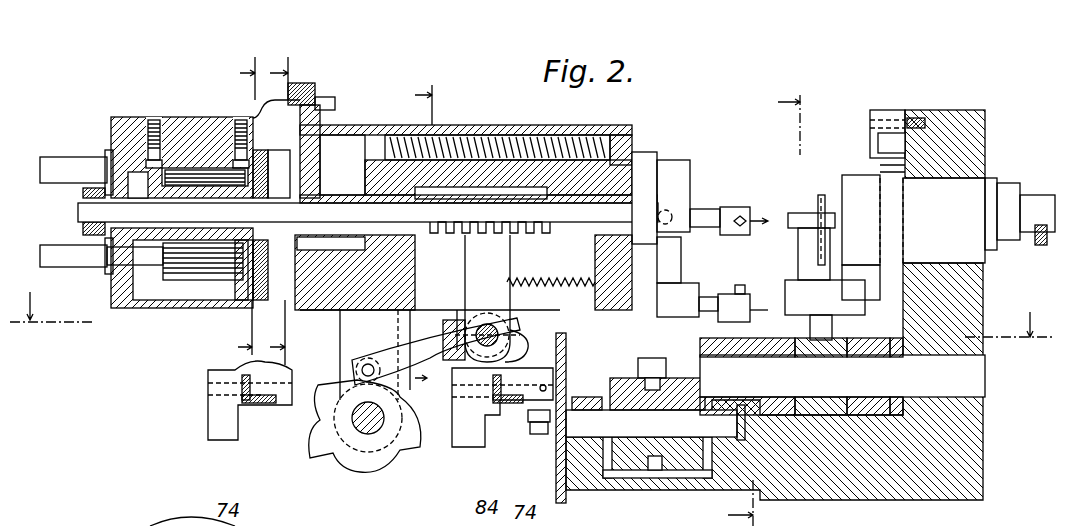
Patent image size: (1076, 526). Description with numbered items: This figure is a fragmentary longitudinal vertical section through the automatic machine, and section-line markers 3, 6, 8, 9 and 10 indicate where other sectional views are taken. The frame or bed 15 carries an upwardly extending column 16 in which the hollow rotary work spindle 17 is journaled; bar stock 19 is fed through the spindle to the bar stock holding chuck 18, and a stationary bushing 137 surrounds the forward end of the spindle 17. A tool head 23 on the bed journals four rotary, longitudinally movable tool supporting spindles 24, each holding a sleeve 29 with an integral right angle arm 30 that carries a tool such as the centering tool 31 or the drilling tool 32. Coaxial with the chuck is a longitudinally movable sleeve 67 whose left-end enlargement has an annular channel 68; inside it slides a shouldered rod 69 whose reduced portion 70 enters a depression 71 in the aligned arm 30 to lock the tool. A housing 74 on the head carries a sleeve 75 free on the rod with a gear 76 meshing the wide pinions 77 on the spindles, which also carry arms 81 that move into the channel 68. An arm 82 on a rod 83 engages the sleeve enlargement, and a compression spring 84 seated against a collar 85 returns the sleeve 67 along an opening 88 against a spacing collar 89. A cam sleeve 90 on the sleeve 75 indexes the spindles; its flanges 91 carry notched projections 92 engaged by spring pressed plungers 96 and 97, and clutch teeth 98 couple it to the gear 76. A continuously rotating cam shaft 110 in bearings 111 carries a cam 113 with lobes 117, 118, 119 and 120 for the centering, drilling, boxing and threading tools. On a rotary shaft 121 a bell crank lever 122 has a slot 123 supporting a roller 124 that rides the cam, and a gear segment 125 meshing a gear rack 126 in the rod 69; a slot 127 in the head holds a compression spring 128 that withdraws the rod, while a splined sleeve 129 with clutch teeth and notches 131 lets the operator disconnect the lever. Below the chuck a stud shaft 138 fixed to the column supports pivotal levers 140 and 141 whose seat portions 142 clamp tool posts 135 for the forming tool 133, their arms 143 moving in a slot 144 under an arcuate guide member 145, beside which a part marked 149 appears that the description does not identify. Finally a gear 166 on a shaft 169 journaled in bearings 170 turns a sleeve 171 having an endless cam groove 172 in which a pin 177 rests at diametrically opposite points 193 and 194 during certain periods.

The section line 3- 3 is at (763, 310).
The section line 6- 6 is at (532, 304).
The section line 8- 8 is at (242, 206).
The section line 9- 9 is at (276, 211).
The section line 10- 10 is at (415, 244).
The frame or bed 15 is at (830, 502).
The column 16 is at (970, 115).
The rotary work spindle 17 is at (1008, 183).
The bar stock holding chuck 18 is at (823, 200).
The bar of stock 19 is at (800, 213).
The tool head 23 is at (476, 125).
The tool supporting spindles 24 is at (62, 157).
The sleeve 29 is at (672, 195).
The right angle arms 30 is at (690, 283).
The centering tool 31 is at (750, 218).
The drilling tool 32 is at (745, 294).
The longitudinally movable sleeve 67 is at (645, 200).
The annular channel 68 is at (345, 245).
The shouldered shaft or rod 69 is at (92, 208).
The reduced portion 70 is at (660, 240).
The depressions 71 is at (680, 200).
The housing 74 is at (193, 117).
The sleeve 75 is at (107, 175).
The gear 76 is at (255, 265).
The pinions 77 is at (285, 110).
The arms 81 is at (312, 165).
The arm 82 is at (345, 175).
The rod 83 is at (360, 180).
The compression spring 84 is at (505, 145).
The collar 85 is at (620, 140).
The opening 88 is at (362, 198).
The spacing collar 89 is at (330, 100).
The cam sleeve 90 is at (178, 280).
The flanges 91 is at (200, 170).
The notched projections 92 is at (242, 130).
The spring pressed plunger 96 is at (246, 80).
The spring pressed plunger 97 is at (154, 118).
The clutch teeth 98 is at (222, 175).
The cam shaft 110 is at (360, 462).
The bearings 111 is at (350, 365).
The cam 113 is at (325, 455).
The cam lobe 117 is at (430, 372).
The cam lobe 118 is at (418, 448).
The cam lobe 119 is at (335, 465).
The cam lobe 120 is at (290, 395).
The rotary shaft 121 is at (515, 345).
The bell crank lever 122 is at (430, 340).
The slot 123 is at (375, 435).
The roller 124 is at (385, 345).
The gear segment 125 is at (500, 240).
The gear rack 126 is at (505, 236).
The slot 127 is at (575, 306).
The compression spring 128 is at (585, 283).
The sleeve 129 is at (487, 322).
The clutch teeth and notches 131 is at (495, 322).
The forming tool 133 is at (835, 220).
The tool posts 135 is at (848, 268).
The stationary bushing 137 is at (855, 178).
The stud shaft 138 is at (975, 370).
The pivotal lever 140 is at (820, 416).
The pivotal lever 141 is at (775, 416).
The seat portions 142 is at (860, 298).
The arms 143 is at (900, 265).
The slot 144 is at (885, 140).
The arcuate guide member 145 is at (875, 110).
The set screw 149 is at (920, 128).
The gear 166 is at (556, 480).
The shaft 169 is at (538, 435).
The bearings 170 is at (575, 398).
The sleeve 171 is at (700, 490).
The endless cam groove 172 is at (655, 460).
The pin 177 is at (678, 380).
The point 193 is at (658, 354).
The point 194 is at (648, 478).